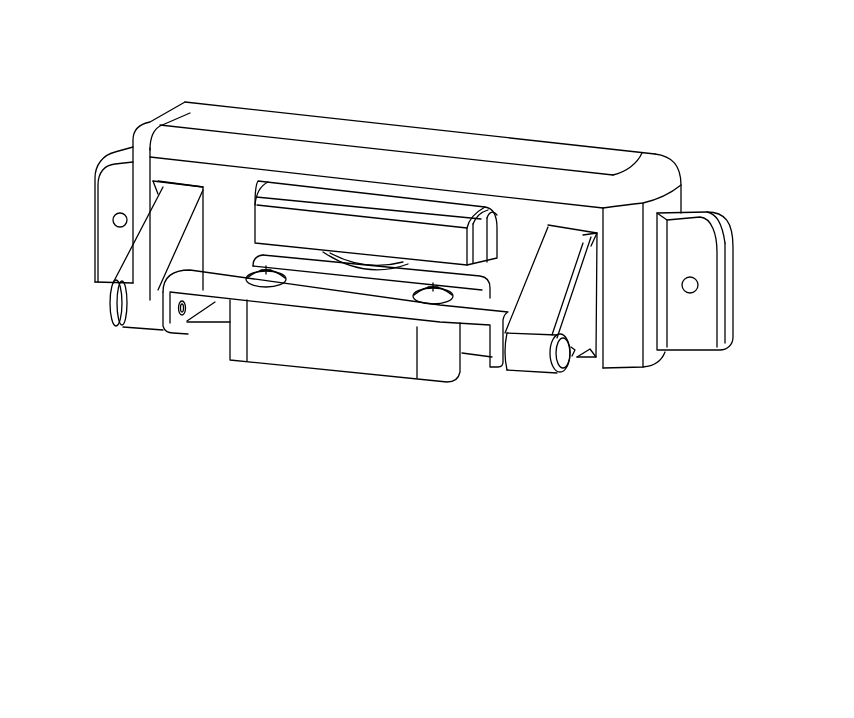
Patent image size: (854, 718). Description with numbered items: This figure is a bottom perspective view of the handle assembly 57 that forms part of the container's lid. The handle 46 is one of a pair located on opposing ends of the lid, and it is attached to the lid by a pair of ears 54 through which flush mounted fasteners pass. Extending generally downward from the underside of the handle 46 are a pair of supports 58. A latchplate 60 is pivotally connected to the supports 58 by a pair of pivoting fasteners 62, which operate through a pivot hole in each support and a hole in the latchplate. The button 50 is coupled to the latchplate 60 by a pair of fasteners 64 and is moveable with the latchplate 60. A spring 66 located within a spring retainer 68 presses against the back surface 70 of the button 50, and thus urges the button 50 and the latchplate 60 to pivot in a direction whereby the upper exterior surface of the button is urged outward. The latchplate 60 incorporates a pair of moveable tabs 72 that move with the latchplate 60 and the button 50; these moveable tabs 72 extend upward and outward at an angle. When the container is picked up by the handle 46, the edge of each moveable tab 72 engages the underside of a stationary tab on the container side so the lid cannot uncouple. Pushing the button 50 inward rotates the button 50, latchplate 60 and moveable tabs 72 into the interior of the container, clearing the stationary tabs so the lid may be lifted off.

The handle assembly 57 is at (301, 88).
The handle 46 is at (530, 220).
The ears 54 is at (693, 305).
The supports 58 is at (167, 247).
The latchplate 60 is at (200, 277).
The pivoting fasteners 62 is at (562, 362).
The fasteners 64 is at (403, 290).
The spring 66 is at (357, 254).
The spring retainer 68 is at (431, 240).
The back surface 70 is at (414, 274).
The moveable tabs 72 is at (215, 305).
The button 50 is at (300, 330).